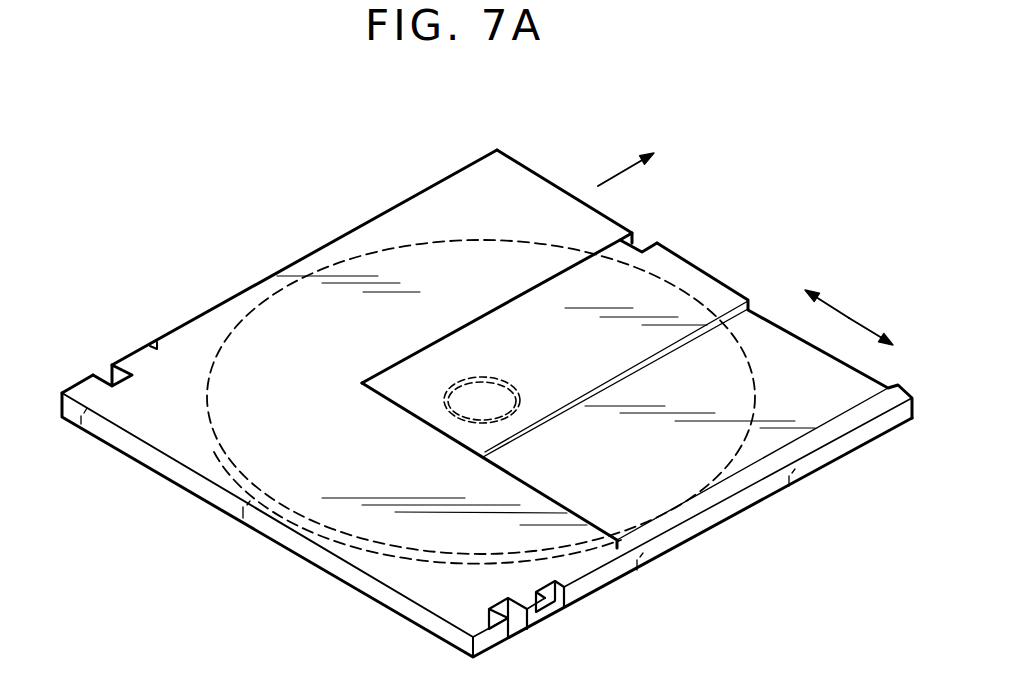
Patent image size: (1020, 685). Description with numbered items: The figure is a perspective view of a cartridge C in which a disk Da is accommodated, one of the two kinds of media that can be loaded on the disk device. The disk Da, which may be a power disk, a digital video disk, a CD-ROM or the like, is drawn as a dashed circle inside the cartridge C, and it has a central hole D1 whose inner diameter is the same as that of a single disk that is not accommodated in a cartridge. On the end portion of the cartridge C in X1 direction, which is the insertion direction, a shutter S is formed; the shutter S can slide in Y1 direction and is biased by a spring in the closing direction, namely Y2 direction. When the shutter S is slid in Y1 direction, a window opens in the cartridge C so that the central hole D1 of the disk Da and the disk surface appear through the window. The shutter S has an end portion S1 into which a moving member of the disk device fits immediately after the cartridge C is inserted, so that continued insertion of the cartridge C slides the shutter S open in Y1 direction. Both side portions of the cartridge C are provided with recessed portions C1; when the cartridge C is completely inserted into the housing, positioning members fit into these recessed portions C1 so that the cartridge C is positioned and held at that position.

The cartridge C is at (160, 428).
The recessed portions C1 is at (145, 348).
The shutter S is at (698, 276).
The end portion of the shutter S1 is at (645, 242).
The disk Da is at (260, 306).
The central hole D1 is at (456, 416).
The insertion direction X1 is at (648, 158).
The shutter opening direction Y1 is at (890, 349).
The closing direction Y2 is at (809, 289).